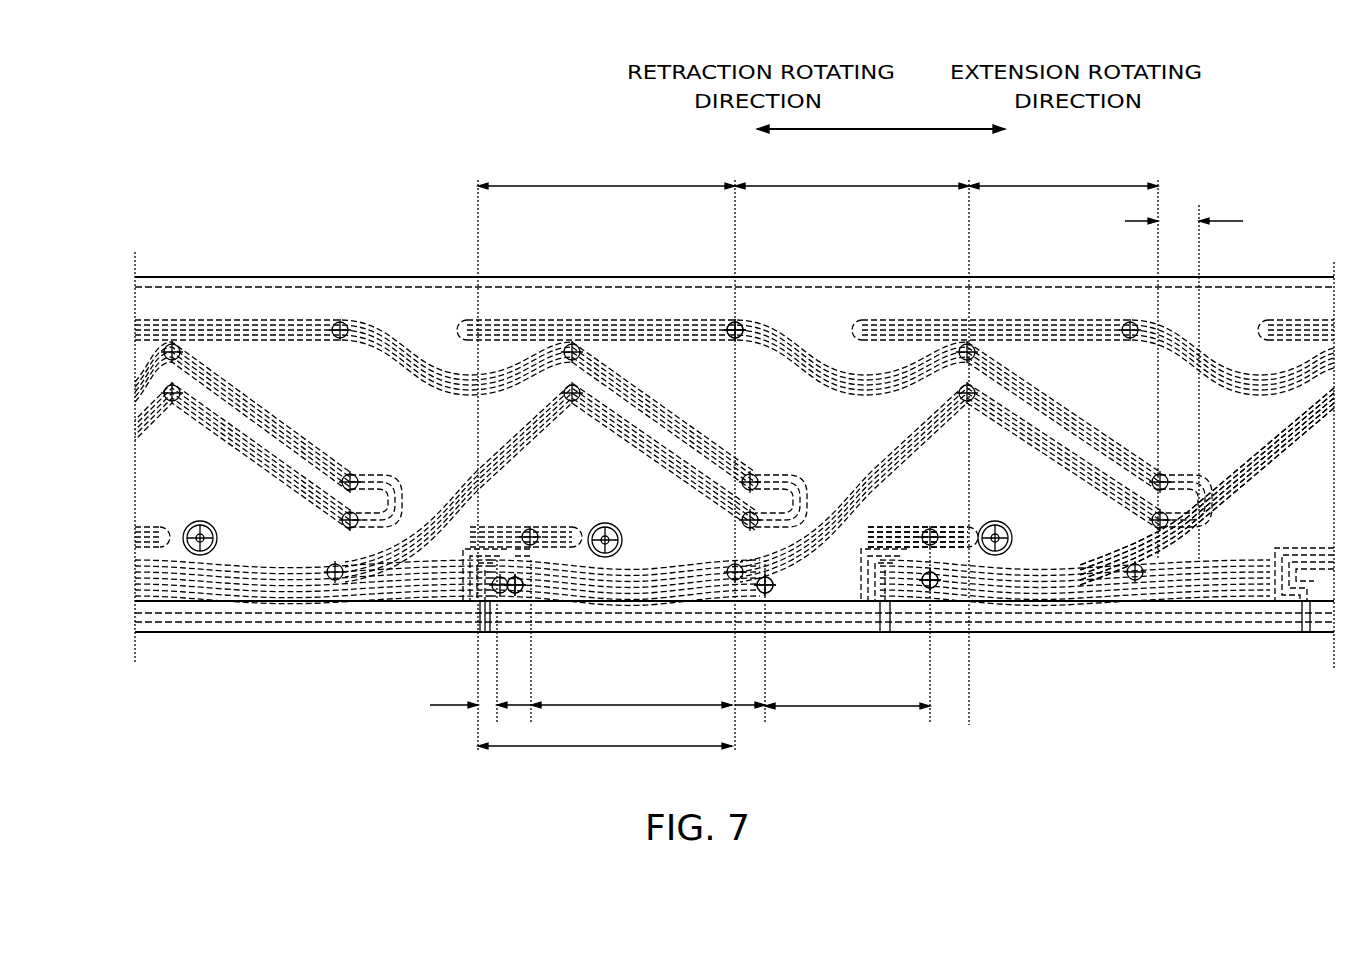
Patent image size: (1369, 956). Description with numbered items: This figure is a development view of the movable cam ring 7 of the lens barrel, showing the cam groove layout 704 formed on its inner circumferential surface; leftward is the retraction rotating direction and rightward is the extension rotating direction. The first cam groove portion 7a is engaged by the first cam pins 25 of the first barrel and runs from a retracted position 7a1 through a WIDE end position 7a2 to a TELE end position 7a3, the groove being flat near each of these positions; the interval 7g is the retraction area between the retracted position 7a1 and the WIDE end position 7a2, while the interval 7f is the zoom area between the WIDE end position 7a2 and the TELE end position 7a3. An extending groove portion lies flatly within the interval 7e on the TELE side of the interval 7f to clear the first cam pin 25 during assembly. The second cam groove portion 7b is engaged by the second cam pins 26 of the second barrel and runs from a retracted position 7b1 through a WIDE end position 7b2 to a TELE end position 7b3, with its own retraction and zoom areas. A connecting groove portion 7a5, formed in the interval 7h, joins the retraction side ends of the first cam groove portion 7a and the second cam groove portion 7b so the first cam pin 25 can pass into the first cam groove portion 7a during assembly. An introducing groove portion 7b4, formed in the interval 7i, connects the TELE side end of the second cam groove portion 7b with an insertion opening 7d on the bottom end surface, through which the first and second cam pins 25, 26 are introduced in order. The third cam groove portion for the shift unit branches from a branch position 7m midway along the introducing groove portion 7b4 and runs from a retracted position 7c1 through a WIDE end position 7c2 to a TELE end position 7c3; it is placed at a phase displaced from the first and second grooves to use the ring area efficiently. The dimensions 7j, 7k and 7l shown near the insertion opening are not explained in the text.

The movable cam ring 7 is at (150, 642).
The wiring pattern 704 is at (648, 326).
The first cam groove portion 7a is at (1060, 402).
The retracted position 7a1 is at (1165, 478).
The first cam pin 25 is at (1180, 501).
The WIDE end position 7a2 is at (975, 352).
The TELE end position 7a3 is at (748, 332).
The connecting groove portion 7a5 is at (1207, 492).
The second cam groove portion 7b is at (1042, 455).
The retracted position 7b1 is at (1137, 540).
The second cam pin 26 is at (995, 538).
The WIDE end position 7b2 is at (967, 402).
The TELE end position 7b3 is at (733, 560).
The introducing groove portion 7b4 is at (645, 530).
The retracted position 7c1 is at (955, 548).
The WIDE end position 7c2 is at (768, 592).
The TELE end position 7c3 is at (520, 592).
The insertion opening 7d is at (492, 635).
The interval 7e is at (880, 530).
The interval 7f is at (852, 442).
The interval 7g is at (1063, 359).
The interval 7h is at (1184, 378).
The interval 7i is at (605, 733).
The terminal spacing 7j is at (648, 641).
The terminal spacing 7k is at (847, 635).
The terminal width 7l is at (480, 641).
The branch position 7m is at (482, 600).